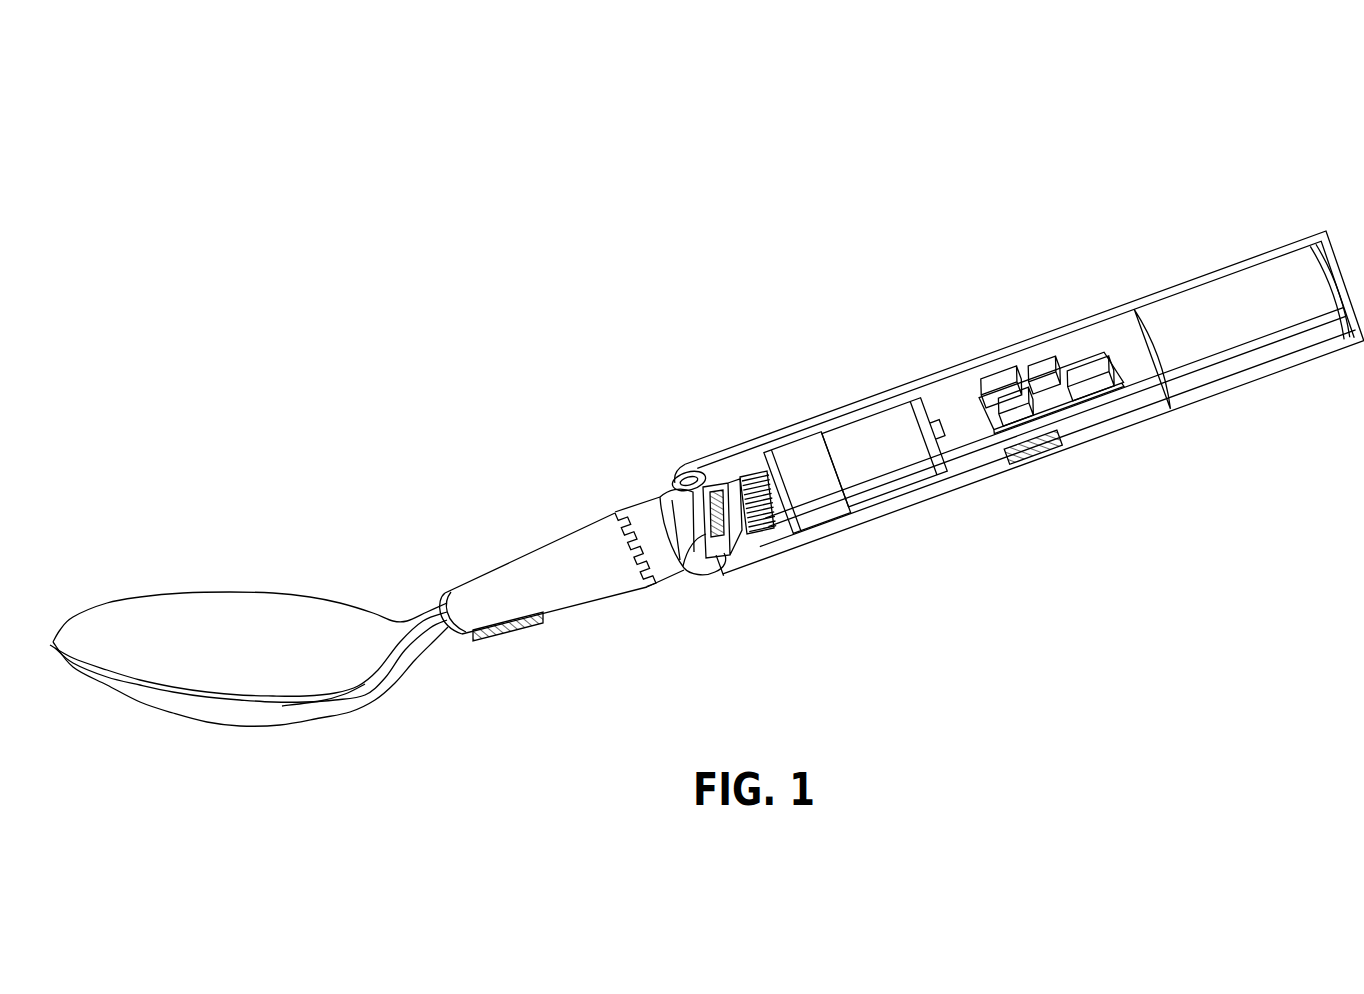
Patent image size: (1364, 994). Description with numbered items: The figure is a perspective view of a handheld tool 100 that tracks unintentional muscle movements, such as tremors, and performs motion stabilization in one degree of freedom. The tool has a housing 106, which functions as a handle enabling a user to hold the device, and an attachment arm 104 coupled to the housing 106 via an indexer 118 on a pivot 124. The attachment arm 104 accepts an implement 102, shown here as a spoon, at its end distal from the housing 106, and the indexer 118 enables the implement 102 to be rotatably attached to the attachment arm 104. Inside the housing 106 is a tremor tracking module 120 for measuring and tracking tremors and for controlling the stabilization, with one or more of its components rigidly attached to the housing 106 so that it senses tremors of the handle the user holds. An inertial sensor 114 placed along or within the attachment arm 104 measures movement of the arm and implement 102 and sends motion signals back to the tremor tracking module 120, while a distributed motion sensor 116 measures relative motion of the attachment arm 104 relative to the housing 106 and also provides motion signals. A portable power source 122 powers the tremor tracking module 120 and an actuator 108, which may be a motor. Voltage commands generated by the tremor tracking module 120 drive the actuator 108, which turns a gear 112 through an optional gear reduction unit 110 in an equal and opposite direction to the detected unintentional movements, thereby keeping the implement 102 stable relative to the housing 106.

The handheld tool 100 is at (860, 147).
The implement 102 is at (184, 593).
The attachment arm 104 is at (548, 564).
The housing 106 is at (875, 395).
The actuator 108 is at (895, 467).
The gear reduction unit 110 is at (830, 490).
The gear 112 is at (760, 567).
The inertial sensor 114 is at (497, 640).
The distributed motion sensor 116 is at (1027, 467).
The indexer 118 is at (610, 510).
The tremor tracking module 120 is at (1057, 367).
The portable power source 122 is at (1217, 380).
The pivot 124 is at (680, 568).